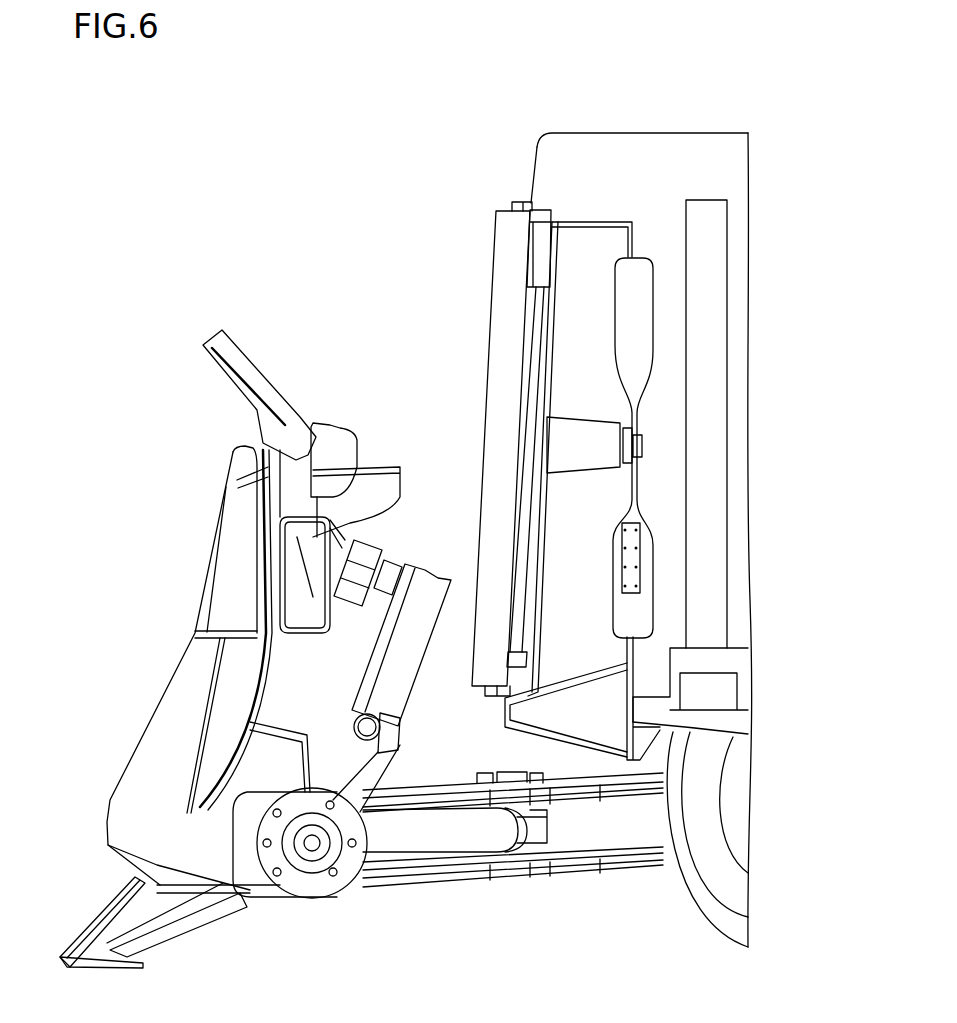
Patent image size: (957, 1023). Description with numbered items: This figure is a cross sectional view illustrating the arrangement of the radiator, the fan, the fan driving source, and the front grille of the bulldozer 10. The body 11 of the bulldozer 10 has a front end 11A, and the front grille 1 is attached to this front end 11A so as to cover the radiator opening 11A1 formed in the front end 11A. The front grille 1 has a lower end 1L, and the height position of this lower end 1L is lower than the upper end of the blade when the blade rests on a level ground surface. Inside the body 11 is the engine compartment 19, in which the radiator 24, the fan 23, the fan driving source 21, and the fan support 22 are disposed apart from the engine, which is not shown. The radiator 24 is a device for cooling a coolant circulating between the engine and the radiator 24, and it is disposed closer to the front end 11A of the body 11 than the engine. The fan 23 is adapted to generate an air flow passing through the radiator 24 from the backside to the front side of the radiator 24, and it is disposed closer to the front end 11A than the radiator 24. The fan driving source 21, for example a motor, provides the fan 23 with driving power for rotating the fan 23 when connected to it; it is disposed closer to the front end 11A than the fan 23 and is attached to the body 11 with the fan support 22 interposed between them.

The bulldozer 10 is at (586, 100).
The body 11 is at (650, 131).
The engine compartment 19 is at (605, 131).
The front end 11A is at (537, 164).
The radiator opening 11A1 is at (543, 233).
The radiator 24 is at (705, 221).
The front grille 1 is at (513, 238).
The lower end of the front grille 1L is at (476, 688).
The fan support 22 is at (547, 332).
The fan driving source 21 is at (577, 447).
The fan 23 is at (620, 563).